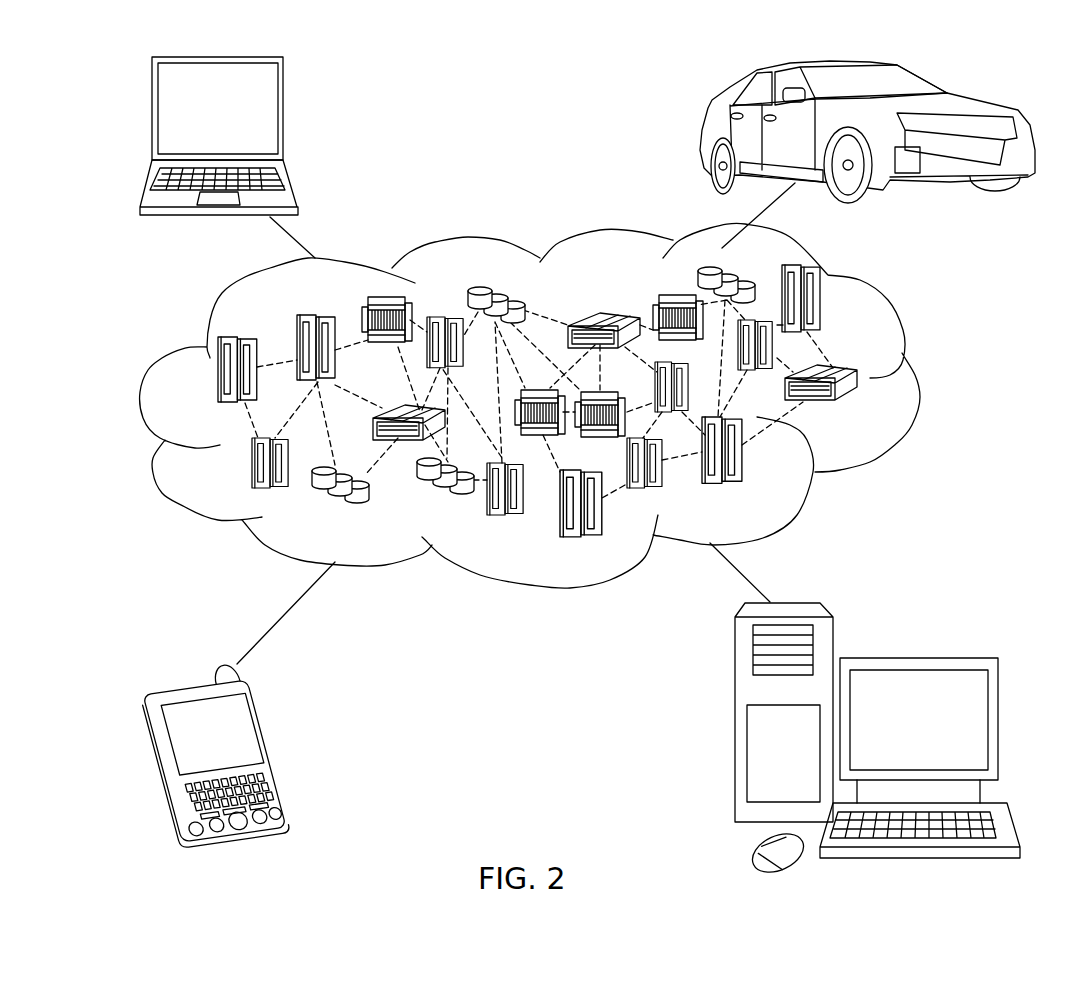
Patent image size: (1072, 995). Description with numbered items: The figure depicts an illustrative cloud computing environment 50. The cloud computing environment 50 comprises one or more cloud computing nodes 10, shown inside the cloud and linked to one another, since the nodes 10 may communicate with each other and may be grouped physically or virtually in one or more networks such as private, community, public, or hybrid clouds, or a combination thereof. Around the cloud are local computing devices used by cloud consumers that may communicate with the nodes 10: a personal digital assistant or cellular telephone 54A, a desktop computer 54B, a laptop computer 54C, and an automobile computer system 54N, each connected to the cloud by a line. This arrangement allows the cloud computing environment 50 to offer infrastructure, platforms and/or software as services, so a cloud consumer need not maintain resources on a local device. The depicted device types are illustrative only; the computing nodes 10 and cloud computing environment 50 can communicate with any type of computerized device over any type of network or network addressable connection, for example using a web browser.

The cloud computing nodes 10 is at (862, 410).
The cloud computing environment 50 is at (918, 380).
The personal digital assistant (PDA) or cellular telephone 54A is at (273, 748).
The desktop computer 54B is at (917, 658).
The laptop computer 54C is at (285, 115).
The automobile computer system 54N is at (706, 131).